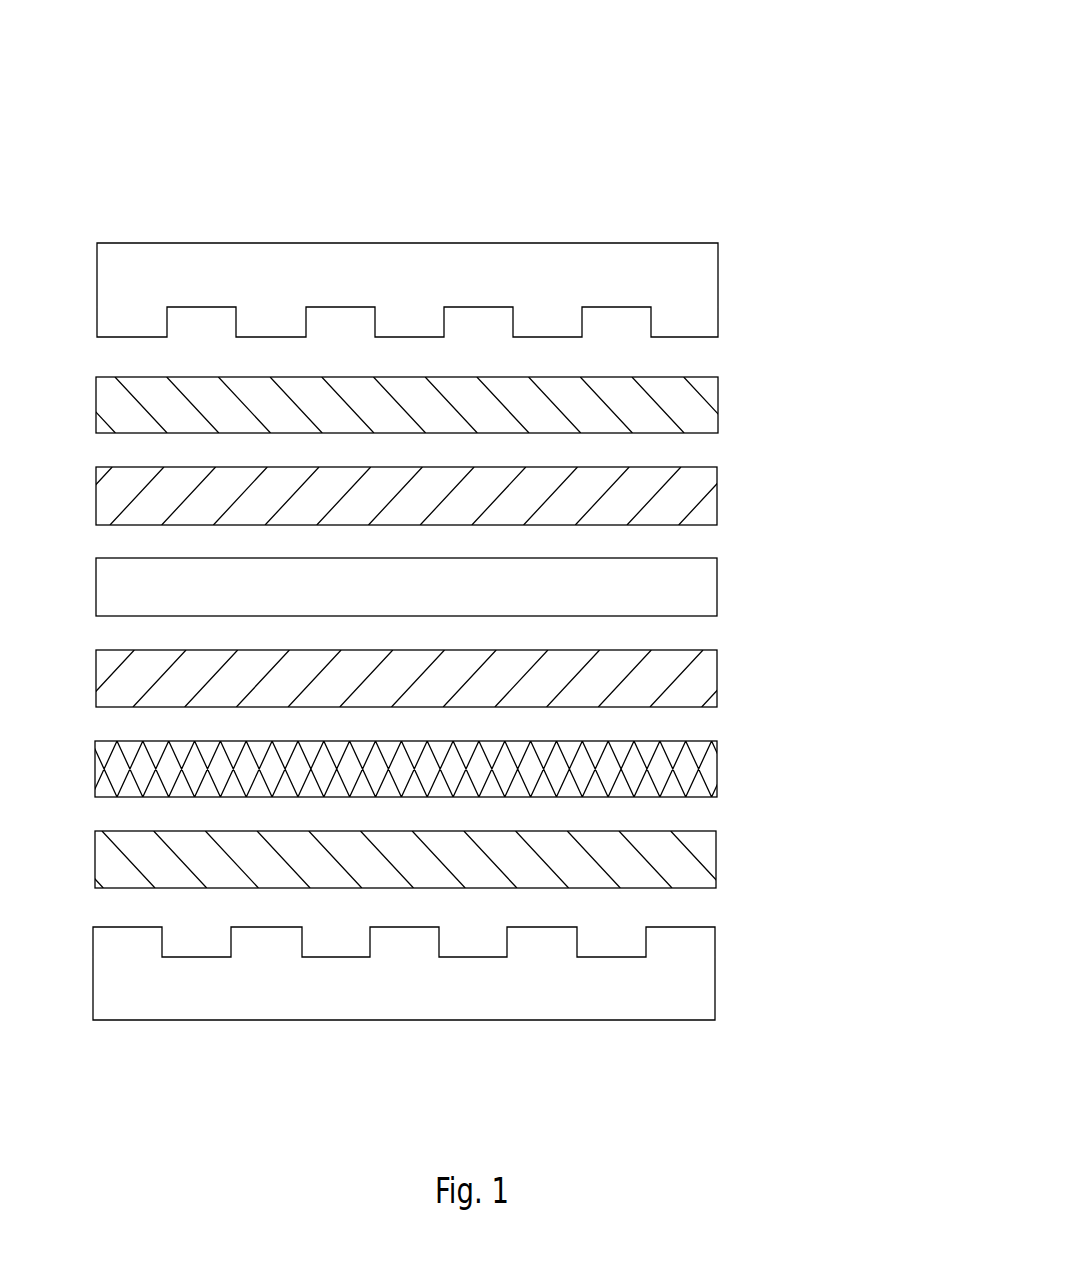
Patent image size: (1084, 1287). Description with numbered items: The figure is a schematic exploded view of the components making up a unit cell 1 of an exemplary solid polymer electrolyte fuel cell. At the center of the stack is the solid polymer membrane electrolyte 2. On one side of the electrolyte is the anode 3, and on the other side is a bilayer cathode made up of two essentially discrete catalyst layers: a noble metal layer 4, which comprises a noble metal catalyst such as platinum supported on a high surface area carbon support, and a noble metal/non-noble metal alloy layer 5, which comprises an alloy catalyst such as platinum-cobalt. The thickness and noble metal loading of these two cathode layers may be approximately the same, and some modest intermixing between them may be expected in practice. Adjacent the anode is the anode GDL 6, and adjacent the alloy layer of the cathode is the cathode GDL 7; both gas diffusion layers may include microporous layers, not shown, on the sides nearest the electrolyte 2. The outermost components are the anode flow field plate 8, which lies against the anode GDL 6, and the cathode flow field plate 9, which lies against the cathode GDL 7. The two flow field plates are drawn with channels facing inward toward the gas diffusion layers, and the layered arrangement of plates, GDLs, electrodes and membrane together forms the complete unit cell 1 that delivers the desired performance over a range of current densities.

The unit cell 1 is at (846, 208).
The solid polymer membrane electrolyte 2 is at (702, 594).
The anode 3 is at (702, 502).
The noble metal layer 4 is at (702, 686).
The noble metal/non-noble metal alloy layer 5 is at (702, 774).
The anode GDL 6 is at (702, 411).
The cathode GDL 7 is at (702, 866).
The anode flow field plate 8 is at (702, 298).
The cathode flow field plate 9 is at (702, 979).